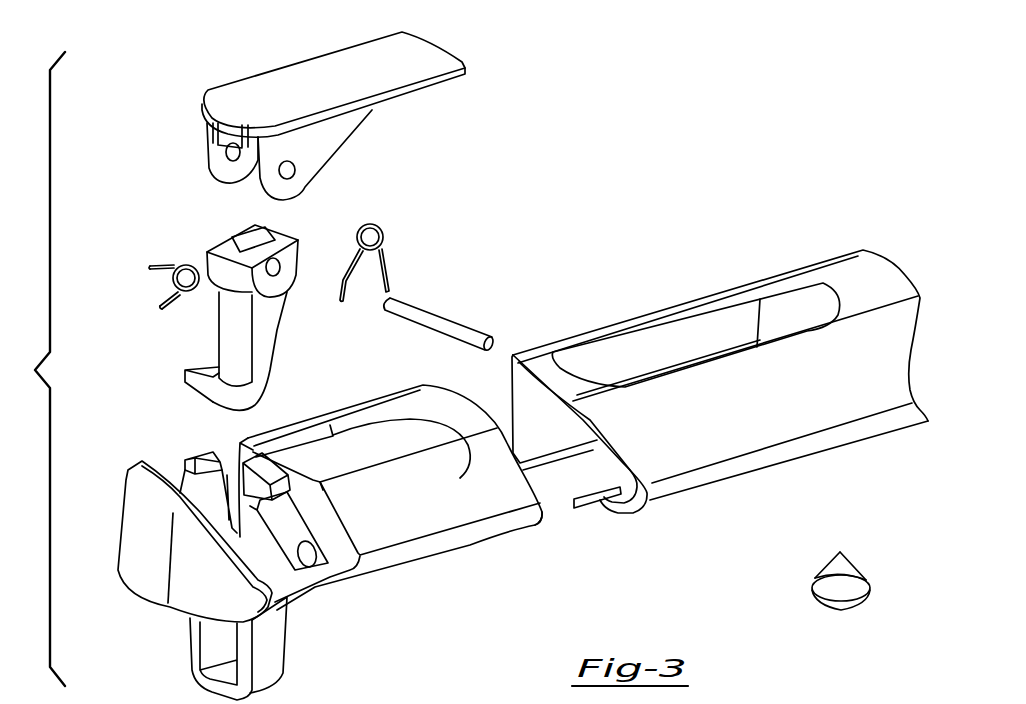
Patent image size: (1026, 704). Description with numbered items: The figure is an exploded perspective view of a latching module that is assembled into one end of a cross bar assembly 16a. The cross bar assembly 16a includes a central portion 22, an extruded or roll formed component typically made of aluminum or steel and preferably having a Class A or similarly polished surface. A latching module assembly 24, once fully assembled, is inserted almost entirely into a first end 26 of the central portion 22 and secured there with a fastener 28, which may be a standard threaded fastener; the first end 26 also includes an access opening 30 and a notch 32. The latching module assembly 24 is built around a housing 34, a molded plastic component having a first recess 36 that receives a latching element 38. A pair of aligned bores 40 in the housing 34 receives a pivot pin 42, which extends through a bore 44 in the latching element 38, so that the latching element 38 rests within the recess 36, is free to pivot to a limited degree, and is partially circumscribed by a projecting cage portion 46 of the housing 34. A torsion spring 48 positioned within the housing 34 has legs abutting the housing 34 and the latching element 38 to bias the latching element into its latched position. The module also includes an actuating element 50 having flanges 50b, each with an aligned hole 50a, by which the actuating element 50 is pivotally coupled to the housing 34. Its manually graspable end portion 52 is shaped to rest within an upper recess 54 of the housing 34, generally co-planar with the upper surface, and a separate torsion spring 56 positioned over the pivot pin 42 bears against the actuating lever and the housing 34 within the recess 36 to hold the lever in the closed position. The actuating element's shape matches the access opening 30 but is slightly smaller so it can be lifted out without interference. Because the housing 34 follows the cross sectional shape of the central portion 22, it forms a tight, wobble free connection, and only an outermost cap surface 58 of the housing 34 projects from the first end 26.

The cross bar assembly 16a is at (720, 351).
The central portion 22 is at (720, 385).
The latching module assembly 24 is at (37, 369).
The first end 26 is at (662, 490).
The fastener 28 is at (847, 565).
The access opening 30 is at (662, 317).
The notch 32 is at (623, 498).
The housing 34 is at (302, 519).
The first recess 36 is at (222, 497).
The latching element 38 is at (272, 298).
The aligned bores 40 is at (310, 553).
The pivot pin 42 is at (450, 310).
The bore 44 is at (246, 250).
The projecting cage portion 46 is at (270, 667).
The torsion spring 48 is at (390, 242).
The actuating element 50 is at (318, 102).
The aligned hole 50a is at (228, 155).
The flanges 50b is at (203, 143).
The manually graspable end portion 52 is at (433, 48).
The upper recess 54 is at (410, 410).
The torsion spring 56 is at (180, 310).
The outermost cap surface 58 is at (145, 533).